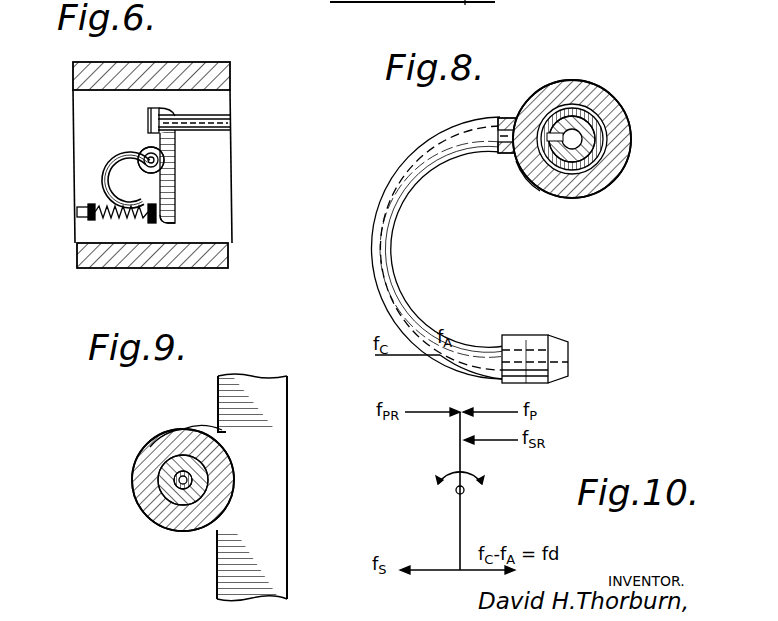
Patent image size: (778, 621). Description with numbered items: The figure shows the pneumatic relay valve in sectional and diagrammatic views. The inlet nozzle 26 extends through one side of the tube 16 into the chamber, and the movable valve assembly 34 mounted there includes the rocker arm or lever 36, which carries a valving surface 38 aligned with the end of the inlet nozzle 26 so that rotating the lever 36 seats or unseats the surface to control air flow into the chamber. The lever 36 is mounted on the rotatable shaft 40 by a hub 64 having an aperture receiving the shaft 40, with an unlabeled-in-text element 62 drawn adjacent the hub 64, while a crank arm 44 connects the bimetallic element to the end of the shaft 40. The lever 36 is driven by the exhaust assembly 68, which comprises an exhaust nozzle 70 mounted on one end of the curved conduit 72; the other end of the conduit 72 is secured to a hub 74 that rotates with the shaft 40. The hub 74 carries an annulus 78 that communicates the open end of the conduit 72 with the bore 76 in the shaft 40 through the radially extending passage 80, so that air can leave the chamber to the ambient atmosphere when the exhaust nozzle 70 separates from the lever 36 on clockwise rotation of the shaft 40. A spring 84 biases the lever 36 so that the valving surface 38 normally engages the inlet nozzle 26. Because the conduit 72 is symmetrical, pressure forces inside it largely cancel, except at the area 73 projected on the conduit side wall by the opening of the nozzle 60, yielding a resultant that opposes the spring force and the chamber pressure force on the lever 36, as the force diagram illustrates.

In FIG. 6, the tube 16 is at (160, 258).
In FIG. 6, the inlet nozzle 26 is at (213, 122).
In FIG. 6, the movable valve assembly 34 is at (178, 203).
In FIG. 6, the lever 36 is at (175, 183).
In FIG. 9, the lever 36 is at (283, 520).
In FIG. 10, the lever 36 is at (462, 513).
In FIG. 6, the valving surface 38 is at (150, 104).
In FIG. 6, the shaft 40 is at (164, 160).
In FIG. 9, the shaft 40 is at (160, 480).
In FIG. 8, the crank arm 44 is at (346, 2).
In FIG. 9, the nozzle 60 is at (173, 431).
In FIG. 9, the roller surface 62 is at (195, 420).
In FIG. 9, the hub 64 is at (152, 447).
In FIG. 6, the exhaust assembly 68 is at (100, 178).
In FIG. 8, the exhaust nozzle 70 is at (525, 335).
In FIG. 8, the conduit 72 is at (390, 233).
In FIG. 8, the area 73 is at (466, 365).
In FIG. 6, the hub 74 is at (146, 150).
In FIG. 8, the hub 74 is at (612, 181).
In FIG. 8, the bore 76 is at (580, 135).
In FIG. 8, the annulus 78 is at (542, 104).
In FIG. 8, the radially extending passage 80 is at (533, 185).
In FIG. 6, the spring 84 is at (120, 212).